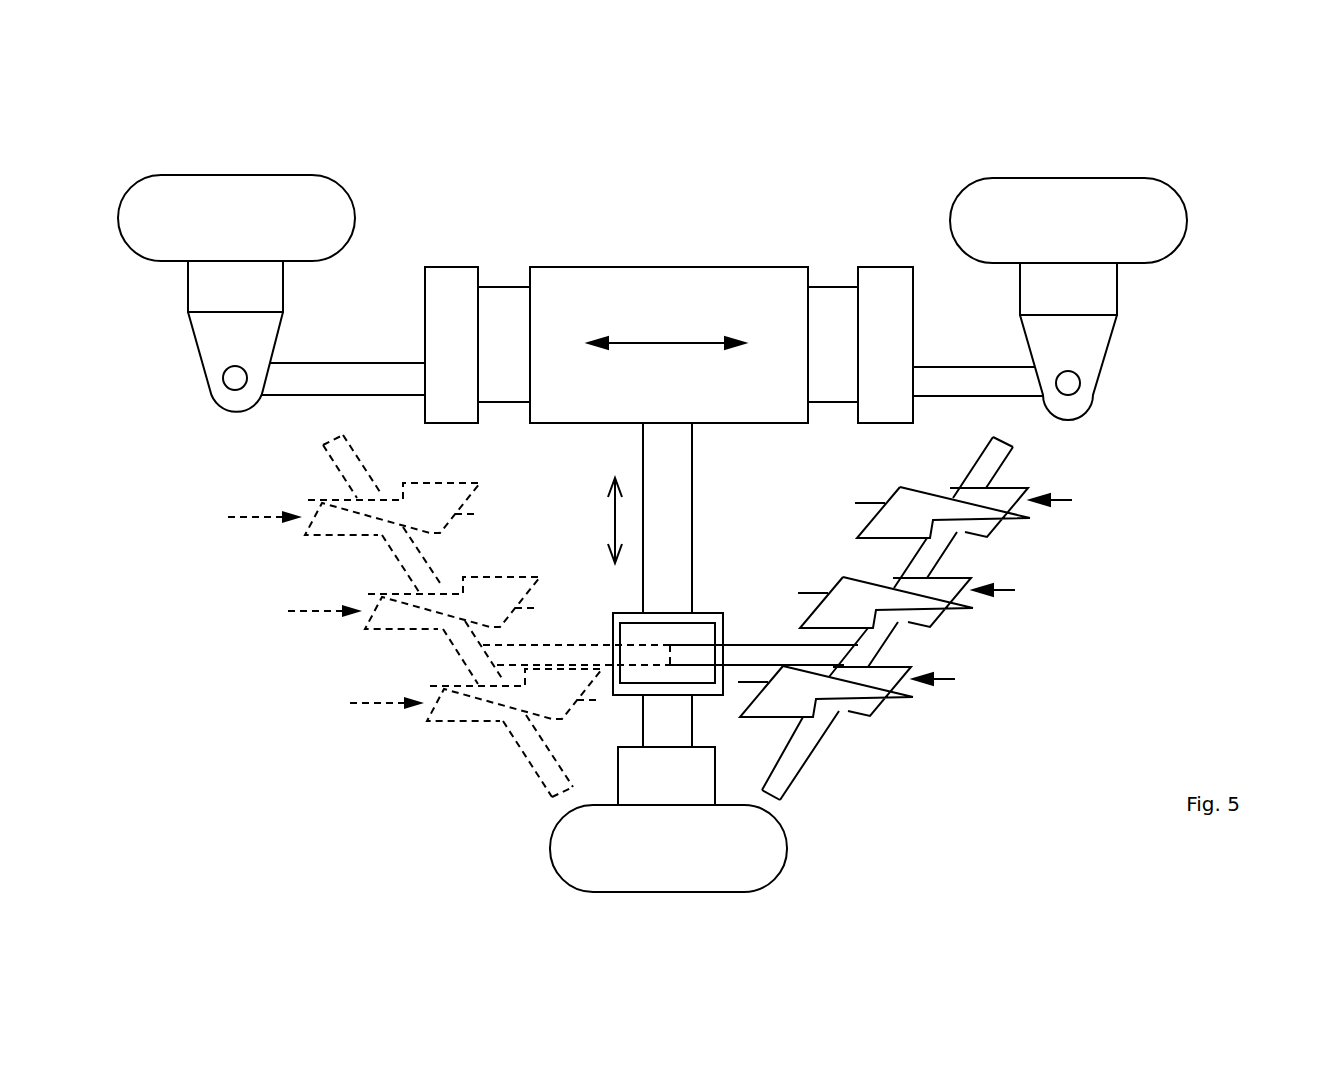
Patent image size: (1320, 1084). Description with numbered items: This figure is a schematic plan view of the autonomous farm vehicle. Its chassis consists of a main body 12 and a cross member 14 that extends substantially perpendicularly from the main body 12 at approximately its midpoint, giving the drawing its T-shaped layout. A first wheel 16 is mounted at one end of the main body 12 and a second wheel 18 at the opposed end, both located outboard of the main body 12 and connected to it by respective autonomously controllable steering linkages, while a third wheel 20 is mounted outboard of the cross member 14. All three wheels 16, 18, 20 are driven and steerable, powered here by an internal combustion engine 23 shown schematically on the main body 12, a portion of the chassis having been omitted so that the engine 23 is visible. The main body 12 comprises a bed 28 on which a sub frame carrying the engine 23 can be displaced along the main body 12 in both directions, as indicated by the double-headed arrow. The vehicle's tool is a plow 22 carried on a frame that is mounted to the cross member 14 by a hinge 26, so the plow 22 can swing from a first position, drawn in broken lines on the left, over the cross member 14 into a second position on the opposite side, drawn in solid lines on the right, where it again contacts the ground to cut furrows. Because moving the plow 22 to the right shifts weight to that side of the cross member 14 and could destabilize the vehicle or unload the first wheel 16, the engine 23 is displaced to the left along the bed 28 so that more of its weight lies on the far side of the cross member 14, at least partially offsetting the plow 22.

The main body 12 is at (464, 251).
The cross member 14 is at (673, 500).
The first wheel 16 is at (168, 193).
The second wheel 18 is at (1153, 213).
The third wheel 20 is at (567, 837).
The plow 22 is at (1022, 531).
The engine 23 is at (658, 288).
The hinge 26 is at (707, 633).
The bed 28 is at (830, 312).